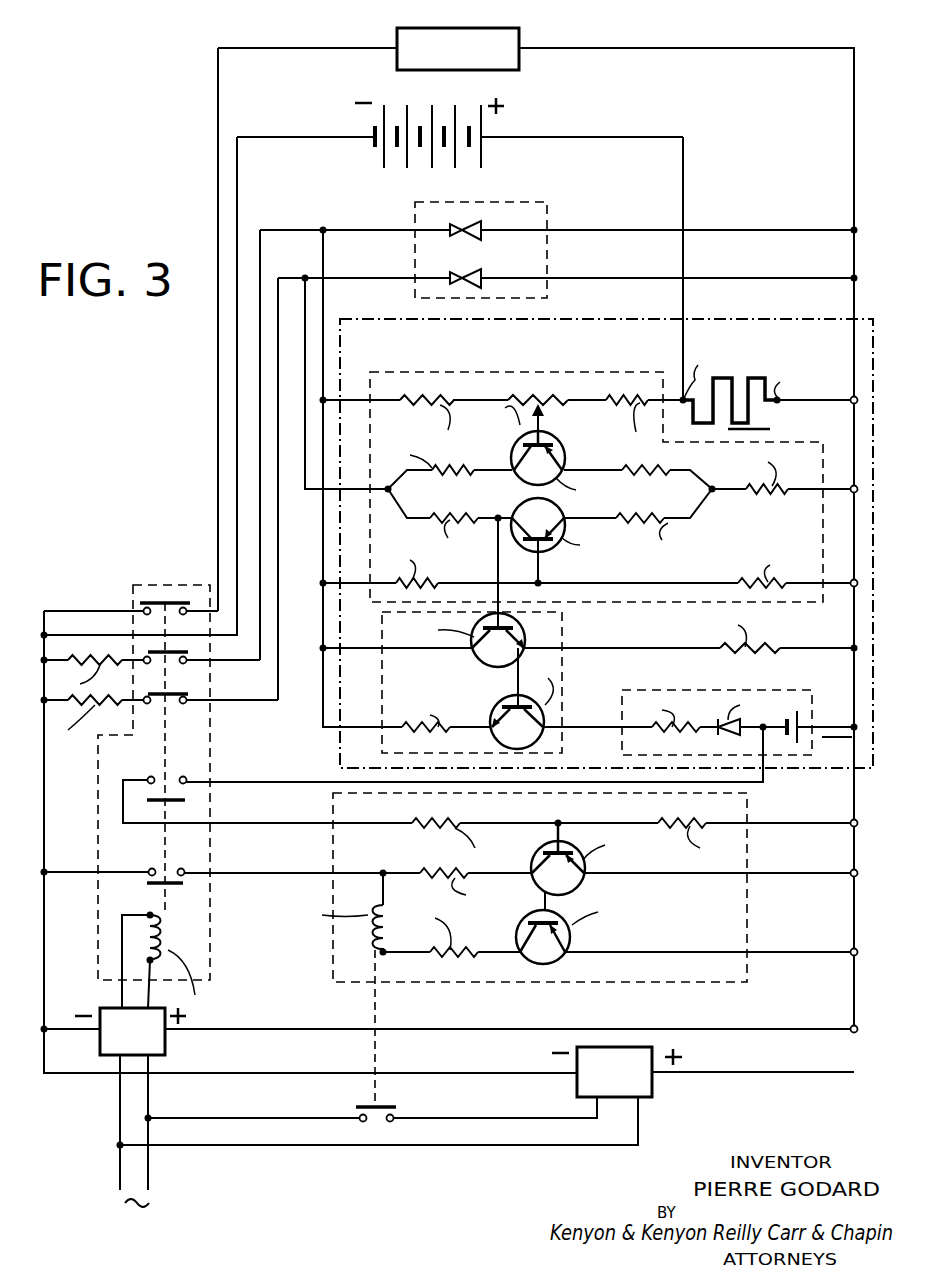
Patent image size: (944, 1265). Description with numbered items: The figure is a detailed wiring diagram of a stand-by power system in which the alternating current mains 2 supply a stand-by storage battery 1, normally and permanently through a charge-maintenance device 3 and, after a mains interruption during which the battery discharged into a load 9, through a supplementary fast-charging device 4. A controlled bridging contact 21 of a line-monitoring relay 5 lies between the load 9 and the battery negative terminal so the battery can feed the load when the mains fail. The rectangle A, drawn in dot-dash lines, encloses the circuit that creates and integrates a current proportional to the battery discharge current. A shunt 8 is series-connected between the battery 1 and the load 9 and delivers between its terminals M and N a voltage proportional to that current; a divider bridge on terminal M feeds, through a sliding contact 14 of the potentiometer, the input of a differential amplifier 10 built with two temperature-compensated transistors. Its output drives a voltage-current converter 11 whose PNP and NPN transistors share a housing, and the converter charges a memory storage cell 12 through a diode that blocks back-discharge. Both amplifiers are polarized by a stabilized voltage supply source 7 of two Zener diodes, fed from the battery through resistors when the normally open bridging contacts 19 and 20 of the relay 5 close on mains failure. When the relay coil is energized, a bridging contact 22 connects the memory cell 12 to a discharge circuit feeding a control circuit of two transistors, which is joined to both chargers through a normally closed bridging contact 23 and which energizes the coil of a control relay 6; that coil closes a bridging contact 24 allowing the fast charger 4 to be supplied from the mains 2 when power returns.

The stand-by storage battery 1 is at (483, 150).
The alternating current mains 2 is at (118, 1180).
The charge-maintenance device 3 is at (155, 1035).
The supplementary fast-charging device 4 is at (645, 1078).
The line-monitoring relay 5 is at (212, 898).
The control relay 6 is at (748, 965).
The stabilized voltage supply source 7 is at (545, 197).
The shunt 8 is at (727, 377).
The load 9 is at (488, 28).
The differential amplifier 10 is at (393, 368).
The voltage-current converter 11 is at (565, 634).
The memory storage cell 12 is at (818, 708).
The sliding contact 14 is at (546, 420).
The bridging contact 19 is at (188, 655).
The bridging contact 20 is at (173, 705).
The bridging contact 21 is at (168, 600).
The bridging contact 22 is at (153, 777).
The bridging contact 23 is at (160, 867).
The bridging contact 24 is at (372, 1105).
The rectangle A is at (877, 325).